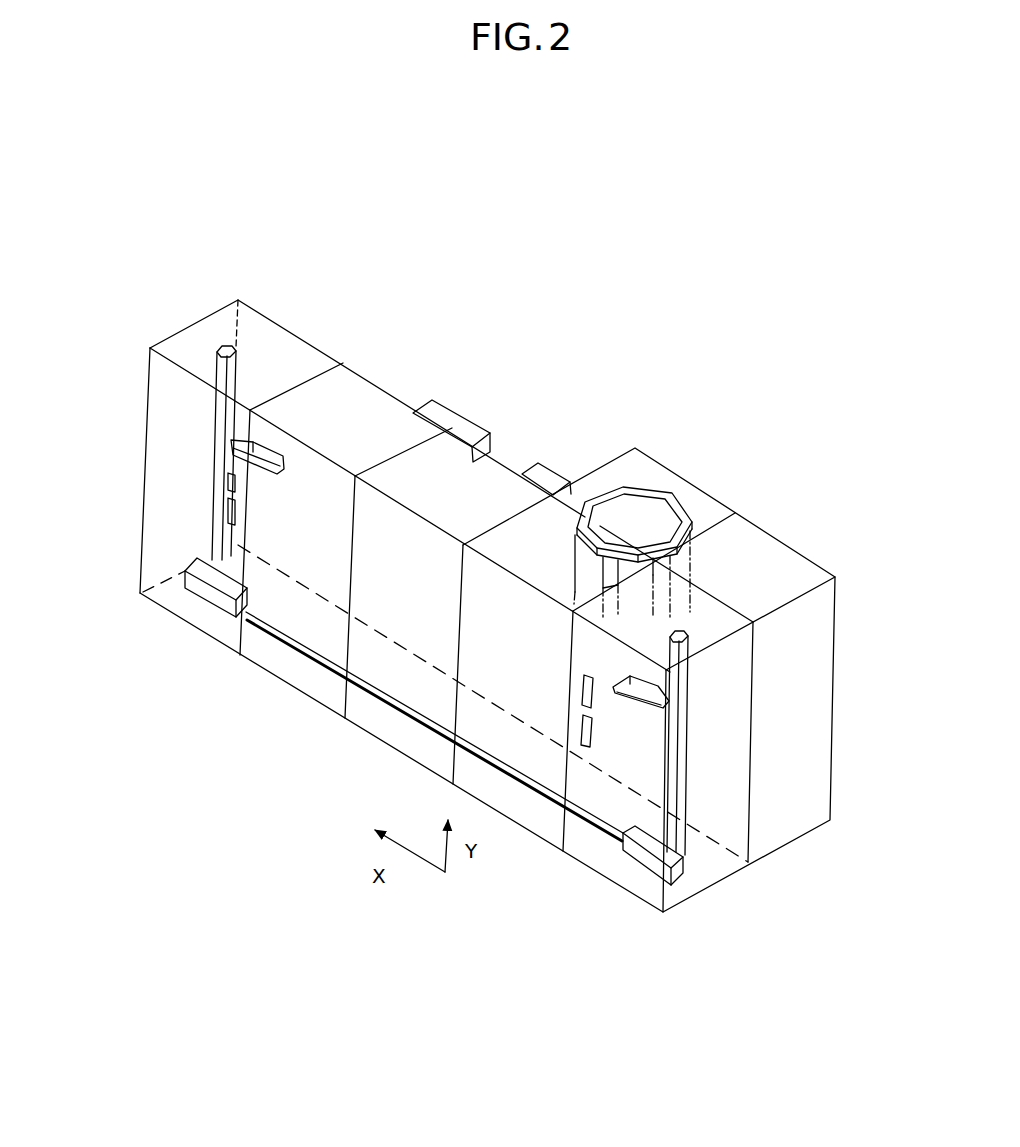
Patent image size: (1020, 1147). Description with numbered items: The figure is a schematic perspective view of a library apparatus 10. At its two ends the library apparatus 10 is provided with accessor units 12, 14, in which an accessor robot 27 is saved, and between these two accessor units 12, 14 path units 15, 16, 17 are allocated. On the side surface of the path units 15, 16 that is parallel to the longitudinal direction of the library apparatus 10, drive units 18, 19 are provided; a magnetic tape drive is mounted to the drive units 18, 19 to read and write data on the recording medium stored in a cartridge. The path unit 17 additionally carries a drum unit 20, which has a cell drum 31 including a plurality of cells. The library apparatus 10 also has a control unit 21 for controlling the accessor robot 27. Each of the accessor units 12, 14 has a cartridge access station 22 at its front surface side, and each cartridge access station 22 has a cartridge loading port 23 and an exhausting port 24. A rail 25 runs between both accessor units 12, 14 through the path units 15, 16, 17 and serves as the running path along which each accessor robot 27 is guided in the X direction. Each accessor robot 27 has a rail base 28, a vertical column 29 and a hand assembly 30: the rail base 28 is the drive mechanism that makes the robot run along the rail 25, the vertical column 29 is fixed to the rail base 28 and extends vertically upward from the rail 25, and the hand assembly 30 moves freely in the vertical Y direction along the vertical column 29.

The library apparatus 10 is at (736, 228).
The accessor unit 12 is at (190, 338).
The accessor unit 14 is at (720, 627).
The path unit 15 is at (378, 457).
The path unit 16 is at (490, 472).
The path unit 17 is at (558, 508).
The drive unit 18 is at (454, 391).
The drive unit 19 is at (543, 473).
The drum unit 20 is at (666, 507).
The control unit 21 is at (793, 570).
The cartridge access station 22 is at (196, 462).
The cartridge loading port 23 is at (233, 481).
The exhausting port 24 is at (220, 512).
The rail 25 is at (300, 655).
The accessor robot 27 is at (198, 428).
The rail base 28 is at (205, 590).
The vertical column 29 is at (215, 395).
The hand assembly 30 is at (270, 462).
The cell drum 31 is at (722, 501).